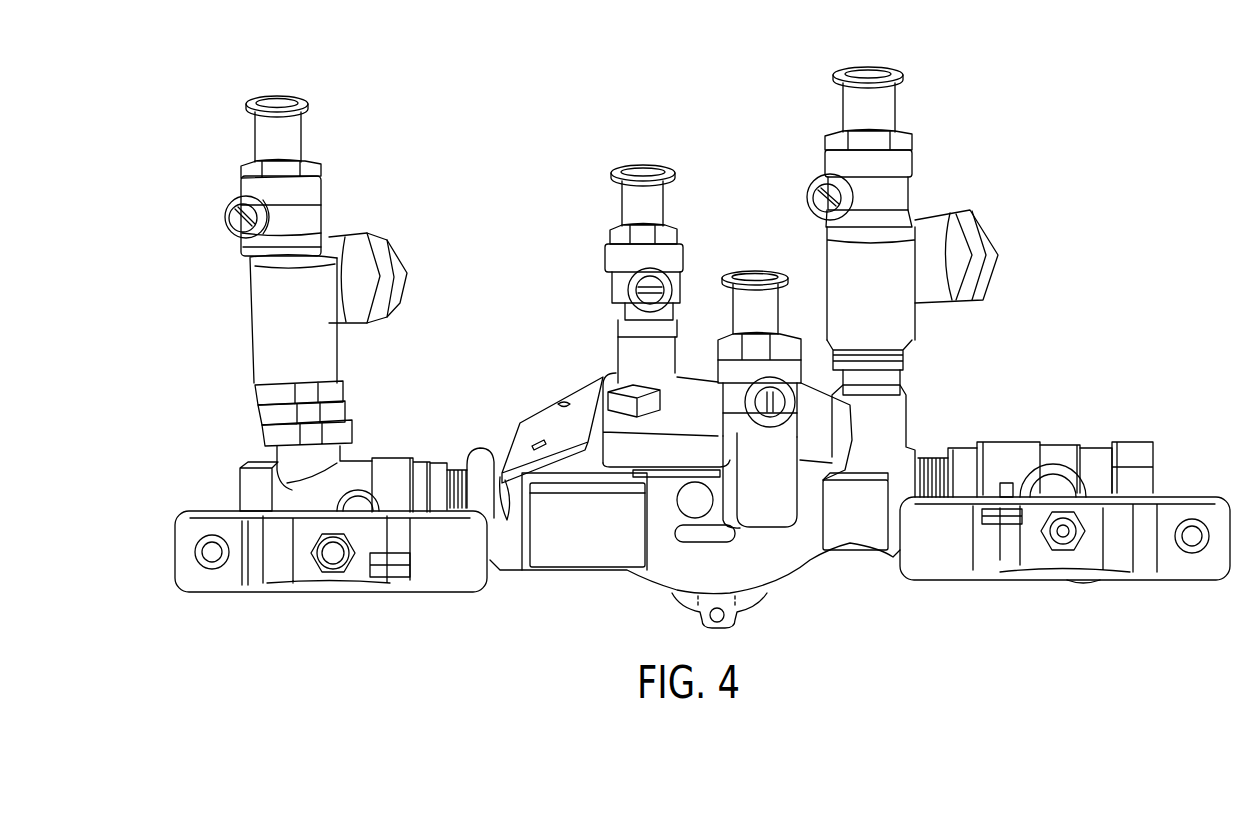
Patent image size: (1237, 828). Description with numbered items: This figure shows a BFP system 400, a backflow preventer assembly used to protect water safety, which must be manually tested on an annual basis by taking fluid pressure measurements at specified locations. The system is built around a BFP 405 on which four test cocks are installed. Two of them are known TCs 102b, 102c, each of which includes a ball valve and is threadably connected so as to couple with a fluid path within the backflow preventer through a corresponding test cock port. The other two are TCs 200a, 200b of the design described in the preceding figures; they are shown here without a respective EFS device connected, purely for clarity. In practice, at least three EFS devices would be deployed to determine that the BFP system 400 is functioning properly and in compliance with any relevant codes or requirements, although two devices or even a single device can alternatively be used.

The BFP system 400 is at (1145, 122).
The TC 200a is at (318, 218).
The TC 200b is at (911, 158).
The TC 102b is at (627, 165).
The TC 102c is at (743, 272).
The BFP 405 is at (782, 582).